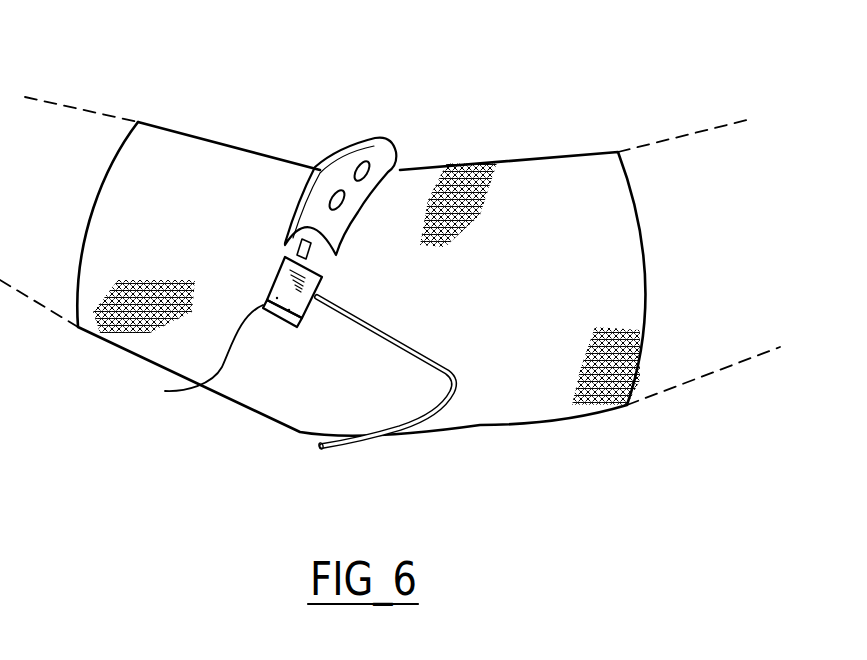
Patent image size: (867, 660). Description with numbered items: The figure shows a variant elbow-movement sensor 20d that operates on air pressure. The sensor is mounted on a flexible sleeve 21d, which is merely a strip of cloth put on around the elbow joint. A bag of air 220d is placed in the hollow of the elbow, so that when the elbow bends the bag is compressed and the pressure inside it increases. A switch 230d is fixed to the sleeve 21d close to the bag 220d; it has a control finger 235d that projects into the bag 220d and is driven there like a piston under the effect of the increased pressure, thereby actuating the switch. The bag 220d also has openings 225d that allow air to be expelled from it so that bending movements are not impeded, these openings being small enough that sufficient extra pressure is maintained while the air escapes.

The movement sensor 20d is at (597, 429).
The flexible sleeve 21d is at (513, 393).
The bag of air 220d is at (386, 152).
The openings 225d is at (331, 196).
The control finger 235d is at (318, 258).
The switch 230d is at (271, 353).